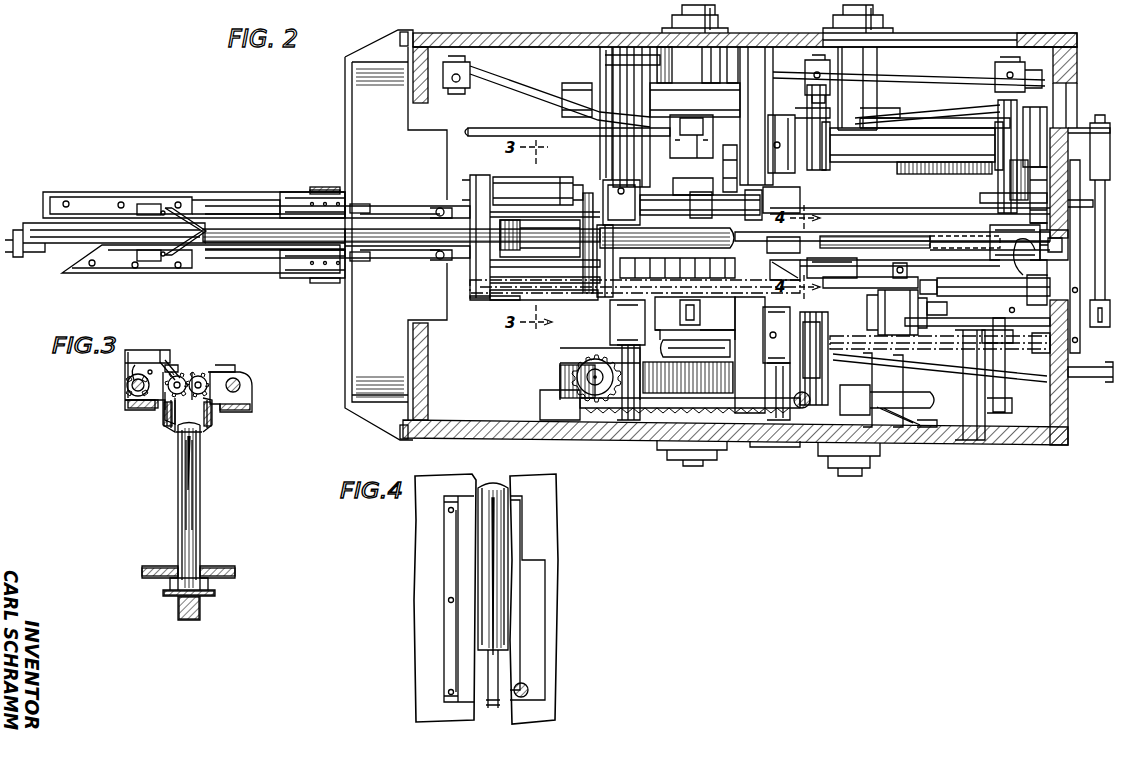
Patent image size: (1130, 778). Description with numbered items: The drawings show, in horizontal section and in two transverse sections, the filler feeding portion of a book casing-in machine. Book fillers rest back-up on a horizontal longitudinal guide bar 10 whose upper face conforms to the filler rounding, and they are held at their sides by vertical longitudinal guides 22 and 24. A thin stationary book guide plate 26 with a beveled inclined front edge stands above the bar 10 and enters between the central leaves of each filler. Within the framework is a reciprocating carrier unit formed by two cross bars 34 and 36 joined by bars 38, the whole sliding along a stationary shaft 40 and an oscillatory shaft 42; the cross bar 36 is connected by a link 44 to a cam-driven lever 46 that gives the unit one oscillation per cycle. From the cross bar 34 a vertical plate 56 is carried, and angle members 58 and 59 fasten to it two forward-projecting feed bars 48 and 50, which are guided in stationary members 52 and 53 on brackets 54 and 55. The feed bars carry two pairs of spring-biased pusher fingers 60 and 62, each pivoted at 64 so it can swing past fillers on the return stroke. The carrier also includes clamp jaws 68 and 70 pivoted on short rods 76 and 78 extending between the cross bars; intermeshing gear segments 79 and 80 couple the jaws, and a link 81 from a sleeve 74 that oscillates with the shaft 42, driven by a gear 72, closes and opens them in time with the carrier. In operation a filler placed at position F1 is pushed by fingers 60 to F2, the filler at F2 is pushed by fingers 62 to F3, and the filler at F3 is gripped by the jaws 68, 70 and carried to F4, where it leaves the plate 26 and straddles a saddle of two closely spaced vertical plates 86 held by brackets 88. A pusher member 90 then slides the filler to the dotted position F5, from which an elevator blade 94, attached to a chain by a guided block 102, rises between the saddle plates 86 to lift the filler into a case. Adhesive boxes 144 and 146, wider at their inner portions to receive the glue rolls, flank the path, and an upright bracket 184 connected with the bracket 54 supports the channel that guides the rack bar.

In FIG. 2, the guide bar 10 is at (36, 229).
In FIG. 3, the guide bar 10 is at (200, 601).
In FIG. 2, the vertical longitudinal guide 22 is at (104, 196).
In FIG. 3, the vertical longitudinal guide 22 is at (144, 568).
In FIG. 2, the vertical longitudinal guide 24 is at (115, 268).
In FIG. 3, the vertical longitudinal guide 24 is at (235, 568).
In FIG. 2, the book guide plate 26 is at (772, 244).
In FIG. 3, the book guide plate 26 is at (190, 483).
In FIG. 2, the cross bar 34 is at (476, 290).
In FIG. 2, the cross bar 36 is at (600, 298).
In FIG. 2, the bar 38 is at (514, 294).
In FIG. 2, the stationary shaft 40 is at (760, 295).
In FIG. 3, the stationary shaft 40 is at (250, 385).
In FIG. 2, the oscillatory shaft 42 is at (888, 195).
In FIG. 3, the oscillatory shaft 42 is at (126, 388).
In FIG. 2, the link 44 is at (652, 205).
In FIG. 2, the lever 46 is at (792, 205).
In FIG. 2, the feed bar 48 is at (226, 212).
In FIG. 2, the feed bar 50 is at (240, 256).
In FIG. 2, the stationary member 52 is at (300, 192).
In FIG. 2, the stationary member 53 is at (297, 275).
In FIG. 2, the bracket 54 is at (312, 192).
In FIG. 2, the bracket 55 is at (332, 283).
In FIG. 2, the vertical plate 56 is at (476, 180).
In FIG. 2, the angle member 58 is at (440, 206).
In FIG. 2, the angle member 59 is at (442, 264).
In FIG. 2, the pusher finger 60 is at (190, 216).
In FIG. 2, the pusher finger 62 is at (386, 210).
In FIG. 2, the pivot connection 64 is at (163, 210).
In FIG. 3, the clamp jaw 68 is at (212, 426).
In FIG. 3, the clamp jaw 70 is at (172, 432).
In FIG. 2, the gear 72 is at (1015, 175).
In FIG. 2, the sleeve 74 is at (550, 186).
In FIG. 3, the sleeve 74 is at (135, 370).
In FIG. 3, the pivot rod 76 is at (206, 374).
In FIG. 3, the pivot rod 78 is at (188, 372).
In FIG. 3, the gear segment 79 is at (222, 375).
In FIG. 3, the gear segment 80 is at (165, 414).
In FIG. 3, the link 81 is at (162, 372).
In FIG. 2, the saddle plate 86 is at (962, 248).
In FIG. 4, the saddle plate 86 is at (494, 664).
In FIG. 2, the bracket 88 is at (1005, 240).
In FIG. 4, the bracket 88 is at (448, 588).
In FIG. 2, the pusher member 90 is at (815, 272).
In FIG. 2, the elevator blade 94 is at (1044, 250).
In FIG. 2, the block 102 is at (1015, 282).
In FIG. 2, the adhesive box 144 is at (347, 98).
In FIG. 2, the adhesive box 146 is at (347, 358).
In FIG. 2, the upright bracket 184 is at (318, 192).
In FIG. 2, the first filler position F1 is at (246, 231).
In FIG. 2, the second filler position F2 is at (426, 230).
In FIG. 2, the third filler position F3 is at (662, 272).
In FIG. 3, the third filler position F3 is at (205, 526).
In FIG. 2, the fourth filler position F4 is at (886, 246).
In FIG. 4, the fourth filler position F4 is at (505, 580).
In FIG. 2, the fifth filler position F5 is at (935, 248).